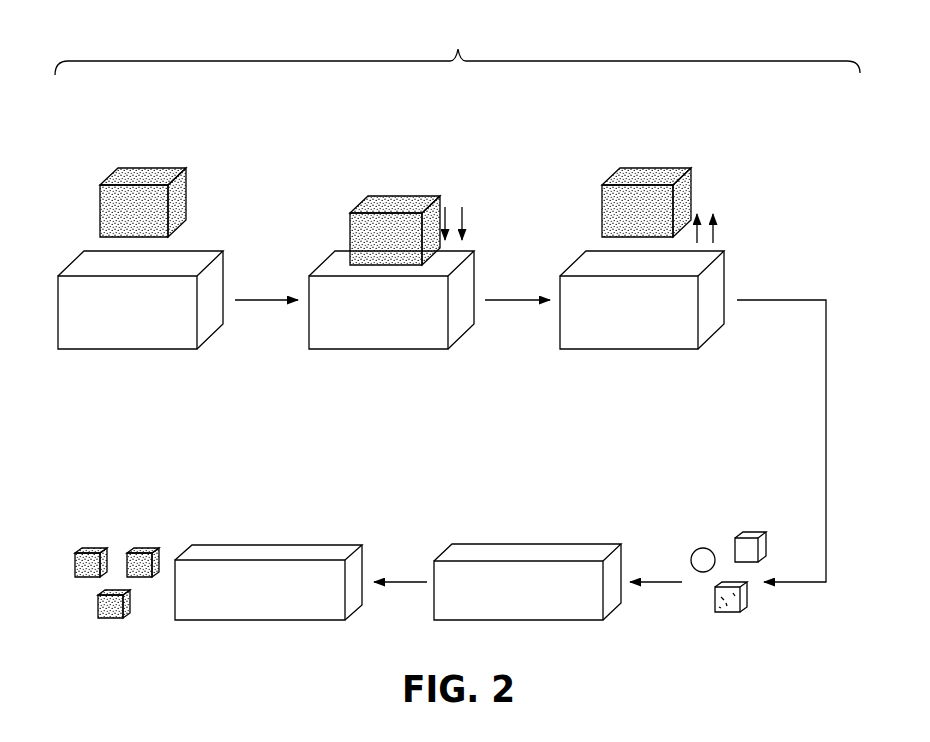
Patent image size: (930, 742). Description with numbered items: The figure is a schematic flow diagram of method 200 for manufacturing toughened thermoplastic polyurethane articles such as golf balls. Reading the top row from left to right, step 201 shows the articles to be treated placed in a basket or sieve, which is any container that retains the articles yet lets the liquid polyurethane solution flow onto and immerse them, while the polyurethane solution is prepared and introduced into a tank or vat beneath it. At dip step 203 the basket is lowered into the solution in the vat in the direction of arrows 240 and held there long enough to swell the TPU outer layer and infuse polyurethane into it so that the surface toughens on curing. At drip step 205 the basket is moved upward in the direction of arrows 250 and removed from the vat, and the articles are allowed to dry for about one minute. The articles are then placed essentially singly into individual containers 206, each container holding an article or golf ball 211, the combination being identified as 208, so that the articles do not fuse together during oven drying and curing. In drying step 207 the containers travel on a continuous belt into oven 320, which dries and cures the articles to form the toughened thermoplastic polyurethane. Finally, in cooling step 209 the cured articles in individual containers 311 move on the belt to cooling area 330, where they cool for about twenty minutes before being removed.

The method 200 is at (457, 50).
The step 201 is at (200, 141).
The dip step 203 is at (437, 172).
The drip step 205 is at (604, 146).
The individual container 206 is at (748, 537).
The drying step 207 is at (551, 509).
The container containing an article 208 is at (728, 608).
The cooling step 209 is at (245, 508).
The article 211 is at (702, 557).
The arrows 240 is at (474, 218).
The arrows 250 is at (730, 223).
The individual containers 311 is at (112, 617).
The oven 320 is at (505, 550).
The cooling area 330 is at (287, 553).